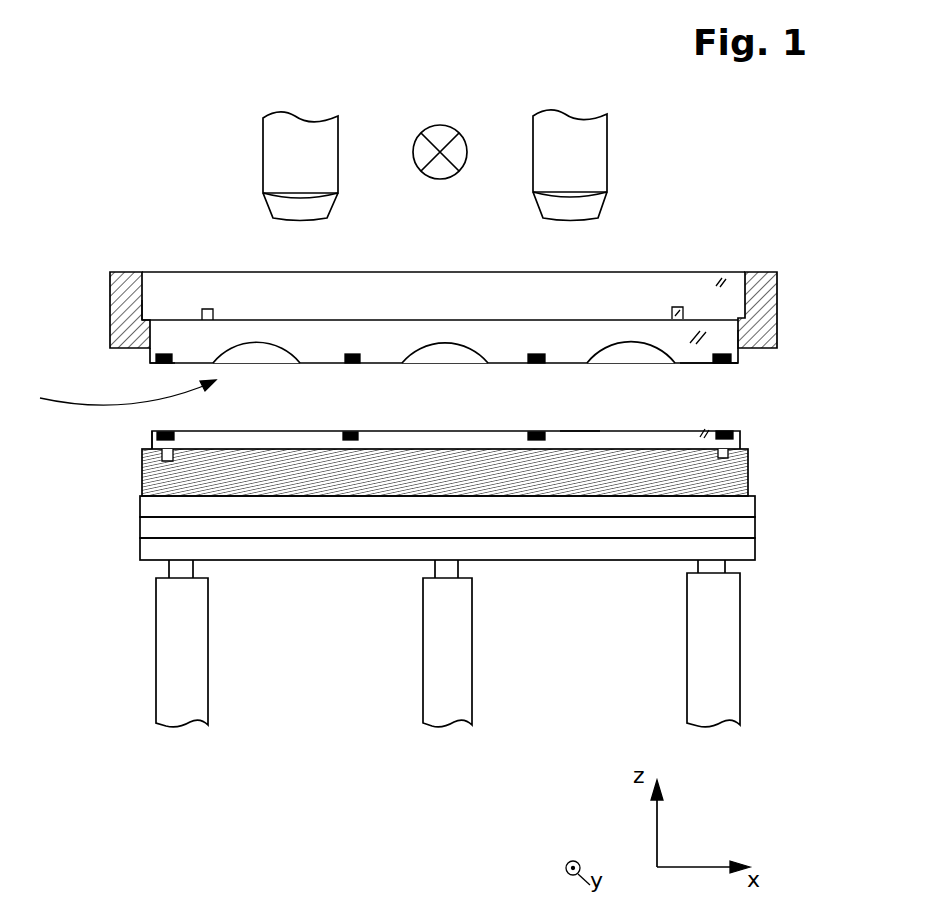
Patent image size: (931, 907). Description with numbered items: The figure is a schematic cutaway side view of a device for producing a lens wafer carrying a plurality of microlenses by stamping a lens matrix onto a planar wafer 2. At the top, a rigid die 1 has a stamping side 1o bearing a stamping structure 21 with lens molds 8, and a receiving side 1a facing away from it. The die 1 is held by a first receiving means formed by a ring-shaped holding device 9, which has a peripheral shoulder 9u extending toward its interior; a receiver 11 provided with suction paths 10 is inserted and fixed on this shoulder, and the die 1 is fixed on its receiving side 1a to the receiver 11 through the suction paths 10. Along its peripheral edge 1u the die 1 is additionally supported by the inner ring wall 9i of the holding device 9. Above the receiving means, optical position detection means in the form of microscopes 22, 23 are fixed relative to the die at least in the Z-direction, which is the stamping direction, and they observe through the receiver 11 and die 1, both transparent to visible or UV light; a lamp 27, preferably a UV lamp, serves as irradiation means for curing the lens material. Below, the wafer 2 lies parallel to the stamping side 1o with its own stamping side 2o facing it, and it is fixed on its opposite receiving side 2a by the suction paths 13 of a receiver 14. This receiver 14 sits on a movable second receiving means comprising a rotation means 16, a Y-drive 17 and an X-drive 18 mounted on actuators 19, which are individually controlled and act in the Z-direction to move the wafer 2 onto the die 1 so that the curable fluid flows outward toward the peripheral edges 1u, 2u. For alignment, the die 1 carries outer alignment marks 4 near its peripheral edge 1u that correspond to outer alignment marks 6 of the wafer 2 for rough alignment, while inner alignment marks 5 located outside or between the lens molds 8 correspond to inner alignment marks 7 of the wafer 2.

The die 1 is at (442, 330).
The receiving side 1a is at (594, 319).
The peripheral edge 1u is at (157, 347).
The stamping side 1o is at (698, 362).
The wafer 2 is at (436, 518).
The receiving side 2a is at (192, 450).
The peripheral edge 2u is at (152, 440).
The stamping side 2o is at (592, 428).
The outer alignment marks 4 is at (157, 367).
The inner alignment marks 5 is at (349, 354).
The outer corresponding alignment marks 6 is at (152, 433).
The inner alignment marks 7 is at (343, 440).
The lens molds 8 is at (255, 346).
The holding device 9 is at (127, 290).
The inner ring wall 9i is at (150, 328).
The peripheral shoulder 9u is at (738, 318).
The suction paths 10 is at (683, 307).
The receiver 11 is at (660, 282).
The suction paths 13 is at (728, 452).
The receiver 14 is at (740, 480).
The rotation means 16 is at (745, 505).
The Y-drive 17 is at (745, 532).
The X-drive 18 is at (745, 550).
The actuators 19 is at (185, 663).
The stamping structure 21 is at (117, 390).
The microscope 22 is at (290, 160).
The microscope 23 is at (585, 158).
The lamp 27 is at (460, 125).